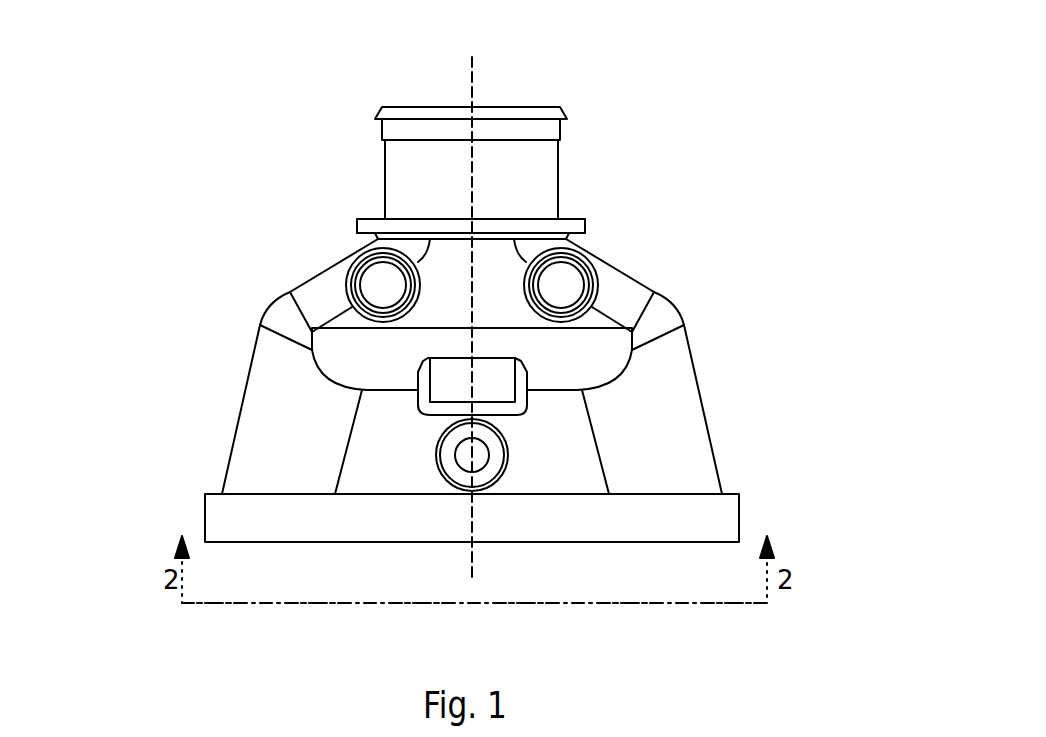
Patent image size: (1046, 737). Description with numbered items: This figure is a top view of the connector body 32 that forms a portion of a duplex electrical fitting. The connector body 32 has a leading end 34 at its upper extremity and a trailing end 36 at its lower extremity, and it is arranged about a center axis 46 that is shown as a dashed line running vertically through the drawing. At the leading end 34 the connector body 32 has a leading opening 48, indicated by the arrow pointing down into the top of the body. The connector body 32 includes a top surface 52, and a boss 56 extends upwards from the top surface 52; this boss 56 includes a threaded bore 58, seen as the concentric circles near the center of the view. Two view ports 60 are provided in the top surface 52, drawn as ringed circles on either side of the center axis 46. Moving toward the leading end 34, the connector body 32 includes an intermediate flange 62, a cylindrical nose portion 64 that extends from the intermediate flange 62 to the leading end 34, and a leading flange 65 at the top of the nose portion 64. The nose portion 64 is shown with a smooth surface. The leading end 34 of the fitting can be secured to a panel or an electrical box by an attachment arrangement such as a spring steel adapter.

The connector body 32 is at (200, 266).
The leading end 34 is at (435, 107).
The trailing end 36 is at (558, 542).
The center axis 46 is at (472, 557).
The leading opening 48 is at (500, 88).
The top surface 52 is at (316, 440).
The boss 56 is at (500, 478).
The threaded bore 58 is at (462, 454).
The view ports 60 is at (350, 270).
The intermediate flange 62 is at (587, 224).
The nose portion 64 is at (558, 178).
The leading flange 65 is at (565, 113).